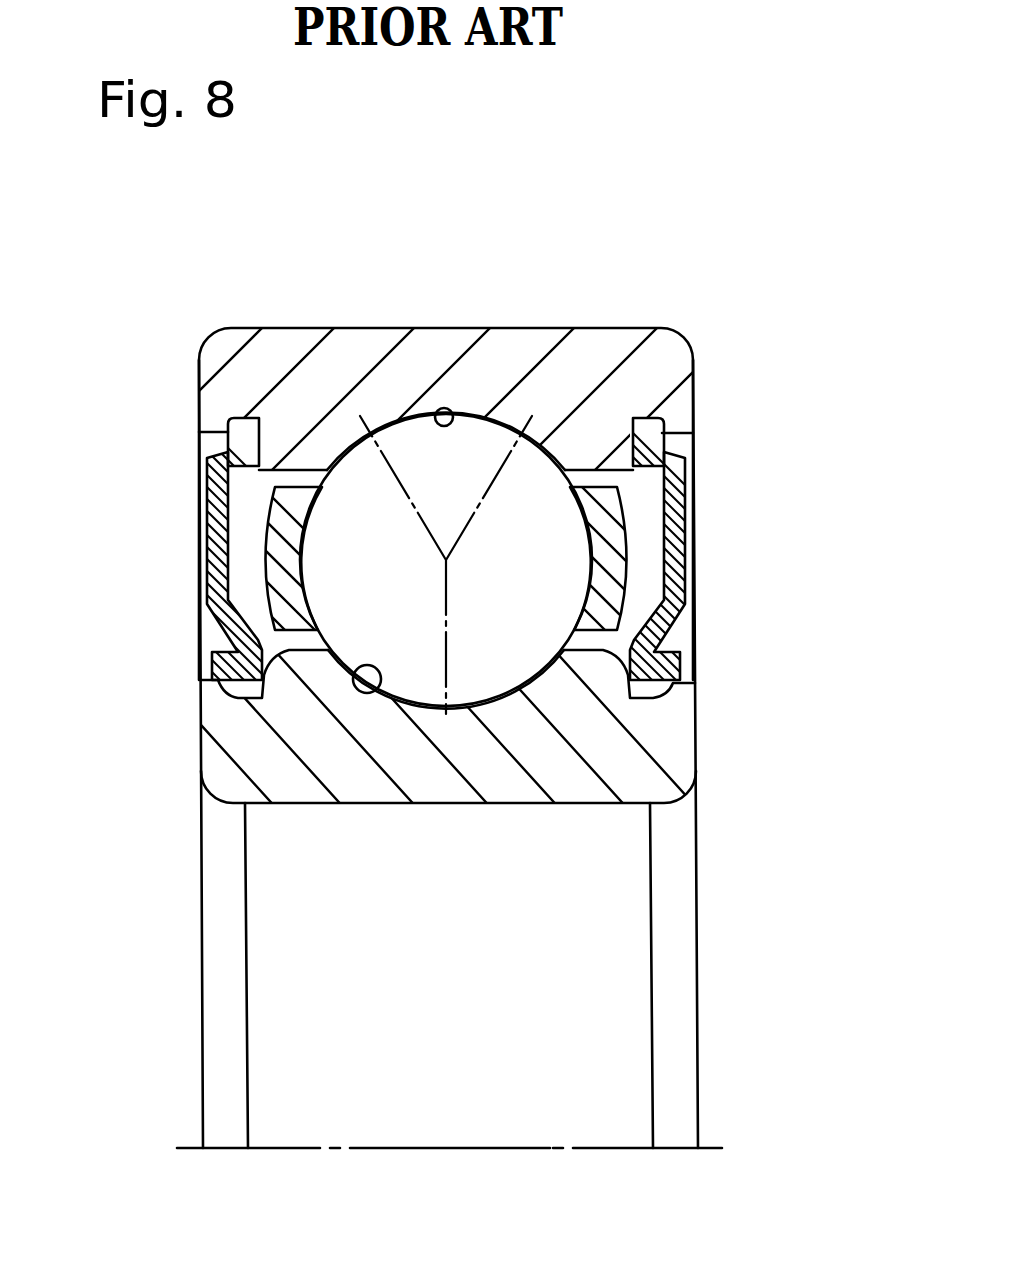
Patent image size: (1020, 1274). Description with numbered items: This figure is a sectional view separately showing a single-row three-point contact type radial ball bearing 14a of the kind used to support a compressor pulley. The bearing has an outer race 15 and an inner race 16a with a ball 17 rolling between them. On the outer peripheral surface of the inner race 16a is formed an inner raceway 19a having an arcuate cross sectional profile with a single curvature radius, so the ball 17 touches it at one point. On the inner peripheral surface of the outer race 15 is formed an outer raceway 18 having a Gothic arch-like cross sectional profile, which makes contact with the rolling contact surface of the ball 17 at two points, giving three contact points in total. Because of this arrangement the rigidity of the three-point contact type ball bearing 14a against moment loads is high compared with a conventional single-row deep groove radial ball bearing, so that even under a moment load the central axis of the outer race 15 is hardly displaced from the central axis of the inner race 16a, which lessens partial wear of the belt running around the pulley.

The single-row three-point contact type ball bearing 14a is at (607, 312).
The outer race 15 is at (313, 388).
The inner race 16a is at (225, 763).
The ball 17 is at (553, 560).
The outer raceway 18 is at (443, 406).
The inner raceway 19a is at (386, 690).